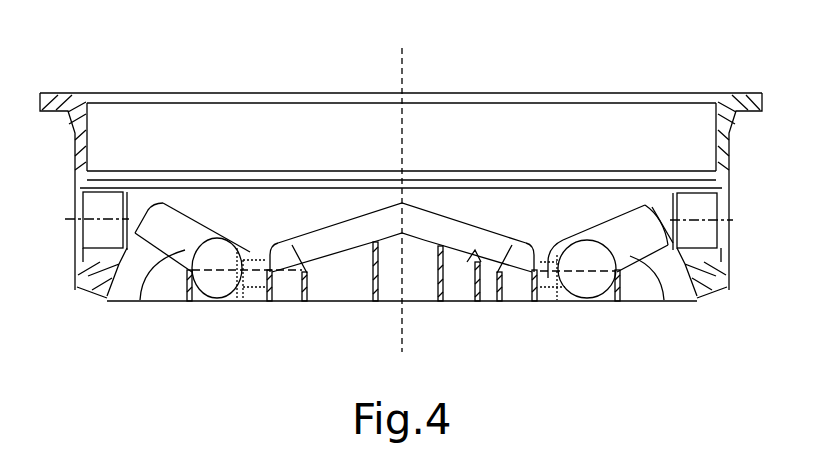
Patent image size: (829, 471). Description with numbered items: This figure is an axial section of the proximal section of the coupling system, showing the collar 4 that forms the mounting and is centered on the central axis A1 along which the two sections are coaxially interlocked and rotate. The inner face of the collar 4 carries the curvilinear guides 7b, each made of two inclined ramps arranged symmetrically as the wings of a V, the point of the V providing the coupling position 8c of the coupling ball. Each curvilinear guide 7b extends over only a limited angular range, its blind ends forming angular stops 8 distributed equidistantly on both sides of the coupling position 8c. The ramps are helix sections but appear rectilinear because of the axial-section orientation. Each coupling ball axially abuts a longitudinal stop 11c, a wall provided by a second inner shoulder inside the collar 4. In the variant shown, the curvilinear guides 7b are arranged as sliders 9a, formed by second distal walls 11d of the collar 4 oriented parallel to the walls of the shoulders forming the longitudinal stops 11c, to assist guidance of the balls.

The central axis A1 is at (405, 186).
The collar 4 is at (727, 185).
The curvilinear guide 7b is at (205, 210).
The angular stop 8 is at (140, 225).
The coupling position 8c is at (385, 226).
The slider 9a is at (108, 272).
The longitudinal stop 11c is at (344, 228).
The second distal wall 11d is at (378, 301).